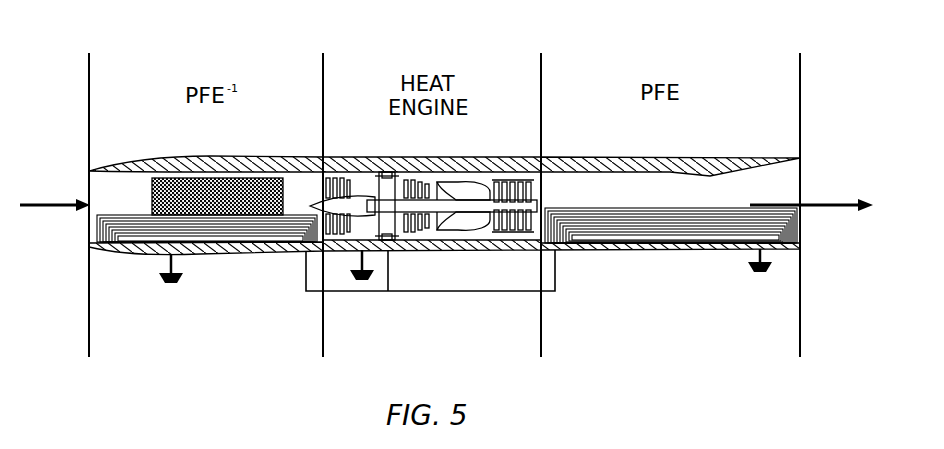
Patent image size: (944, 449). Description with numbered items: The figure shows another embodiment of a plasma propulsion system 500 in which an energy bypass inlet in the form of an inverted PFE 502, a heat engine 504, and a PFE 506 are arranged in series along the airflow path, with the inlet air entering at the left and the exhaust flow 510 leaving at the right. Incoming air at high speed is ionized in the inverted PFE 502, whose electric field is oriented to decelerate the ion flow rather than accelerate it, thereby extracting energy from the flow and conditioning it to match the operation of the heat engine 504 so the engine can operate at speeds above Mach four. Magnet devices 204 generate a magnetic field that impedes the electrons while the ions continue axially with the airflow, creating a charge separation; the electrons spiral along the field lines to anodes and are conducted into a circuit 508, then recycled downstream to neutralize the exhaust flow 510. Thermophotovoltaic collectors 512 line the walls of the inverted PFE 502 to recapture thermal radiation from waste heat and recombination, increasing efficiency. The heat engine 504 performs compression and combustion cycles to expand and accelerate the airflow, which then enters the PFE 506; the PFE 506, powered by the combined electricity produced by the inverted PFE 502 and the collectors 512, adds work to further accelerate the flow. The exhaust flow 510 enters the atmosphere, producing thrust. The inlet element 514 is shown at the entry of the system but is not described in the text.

The plasma propulsion system 500 is at (142, 30).
The inverted PFE (PFE^-1) 502 is at (191, 152).
The heat engine 504 is at (432, 152).
The PFE 506 is at (669, 152).
The circuit 508 is at (306, 281).
The exhaust flow 510 is at (819, 219).
The thermophotovoltaic (TPV) collectors 512 is at (212, 176).
The inlet flow 514 is at (106, 188).
The magnet devices 204 is at (100, 236).